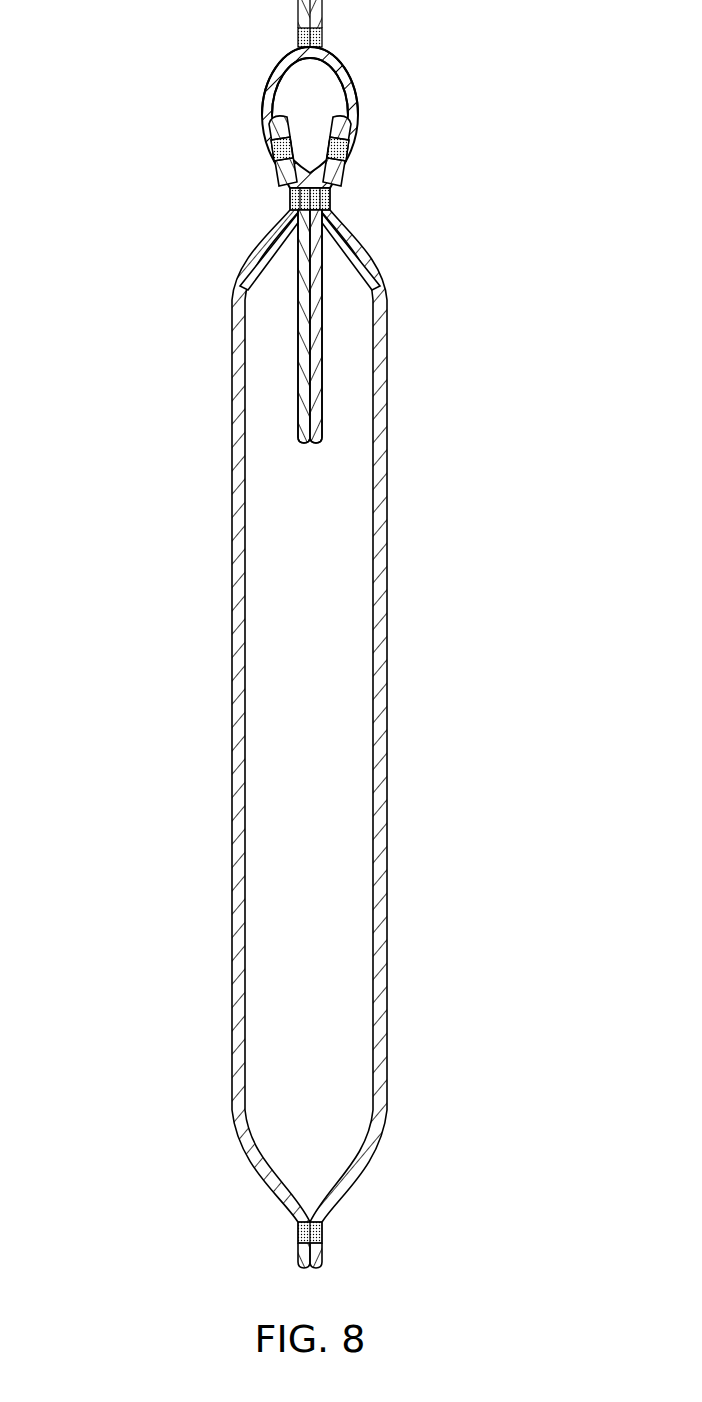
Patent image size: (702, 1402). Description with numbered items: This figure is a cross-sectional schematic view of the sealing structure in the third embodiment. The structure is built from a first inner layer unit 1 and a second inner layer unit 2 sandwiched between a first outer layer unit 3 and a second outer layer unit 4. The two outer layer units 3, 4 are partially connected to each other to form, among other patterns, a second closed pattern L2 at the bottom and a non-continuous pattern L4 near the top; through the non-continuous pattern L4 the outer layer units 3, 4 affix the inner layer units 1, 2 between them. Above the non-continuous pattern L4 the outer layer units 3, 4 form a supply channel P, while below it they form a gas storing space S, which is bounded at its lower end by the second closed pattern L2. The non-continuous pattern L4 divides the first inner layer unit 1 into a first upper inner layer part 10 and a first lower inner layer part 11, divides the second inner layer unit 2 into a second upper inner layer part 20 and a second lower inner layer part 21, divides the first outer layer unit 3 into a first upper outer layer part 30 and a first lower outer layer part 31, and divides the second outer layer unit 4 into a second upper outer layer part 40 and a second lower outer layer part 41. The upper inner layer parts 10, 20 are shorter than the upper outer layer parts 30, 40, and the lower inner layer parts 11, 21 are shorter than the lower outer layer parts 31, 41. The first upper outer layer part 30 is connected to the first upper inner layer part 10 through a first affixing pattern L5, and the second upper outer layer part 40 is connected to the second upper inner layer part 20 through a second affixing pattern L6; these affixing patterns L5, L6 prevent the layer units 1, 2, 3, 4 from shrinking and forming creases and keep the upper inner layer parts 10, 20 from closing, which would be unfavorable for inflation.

The supply channel P is at (318, 75).
The gas storing space S is at (333, 784).
The first inner layer unit 1 is at (224, 203).
The first upper inner layer part 10 is at (235, 163).
The first lower inner layer part 11 is at (240, 251).
The second inner layer unit 2 is at (386, 191).
The second upper inner layer part 20 is at (368, 139).
The second lower inner layer part 21 is at (378, 251).
The first outer layer unit 3 is at (173, 175).
The first upper outer layer part 30 is at (262, 92).
The first lower outer layer part 31 is at (186, 255).
The second outer layer unit 4 is at (445, 175).
The second upper outer layer part 40 is at (358, 95).
The second lower outer layer part 41 is at (434, 255).
The second closed pattern L2 is at (298, 1232).
The non-continuous pattern L4 is at (335, 202).
The first affixing pattern L5 is at (275, 148).
The second affixing pattern L6 is at (330, 147).